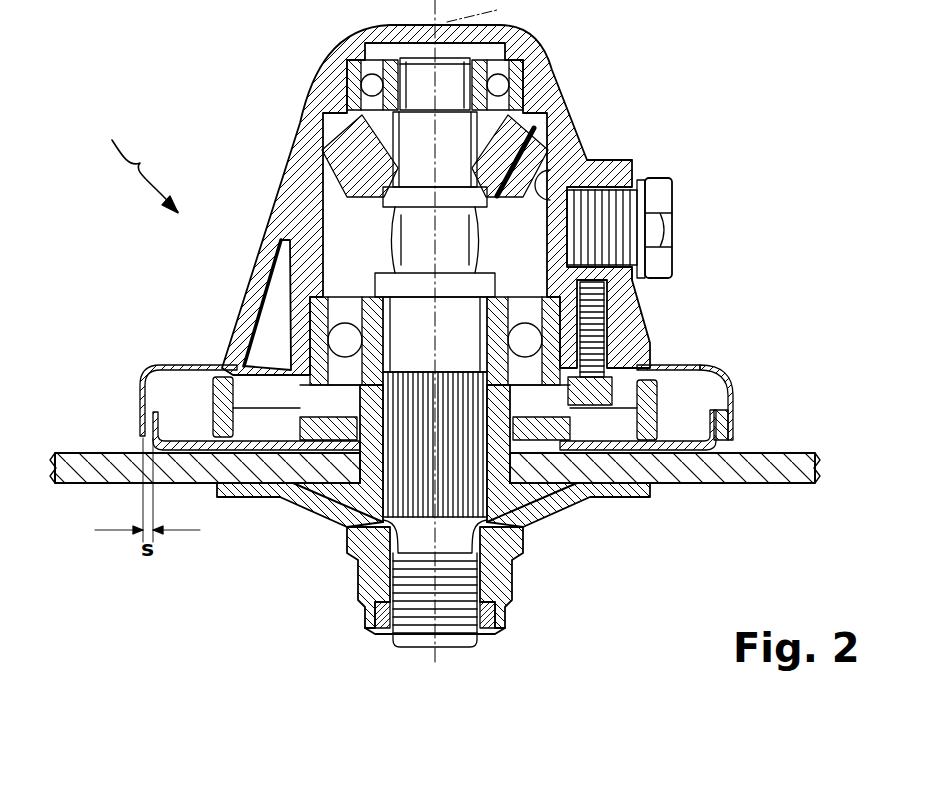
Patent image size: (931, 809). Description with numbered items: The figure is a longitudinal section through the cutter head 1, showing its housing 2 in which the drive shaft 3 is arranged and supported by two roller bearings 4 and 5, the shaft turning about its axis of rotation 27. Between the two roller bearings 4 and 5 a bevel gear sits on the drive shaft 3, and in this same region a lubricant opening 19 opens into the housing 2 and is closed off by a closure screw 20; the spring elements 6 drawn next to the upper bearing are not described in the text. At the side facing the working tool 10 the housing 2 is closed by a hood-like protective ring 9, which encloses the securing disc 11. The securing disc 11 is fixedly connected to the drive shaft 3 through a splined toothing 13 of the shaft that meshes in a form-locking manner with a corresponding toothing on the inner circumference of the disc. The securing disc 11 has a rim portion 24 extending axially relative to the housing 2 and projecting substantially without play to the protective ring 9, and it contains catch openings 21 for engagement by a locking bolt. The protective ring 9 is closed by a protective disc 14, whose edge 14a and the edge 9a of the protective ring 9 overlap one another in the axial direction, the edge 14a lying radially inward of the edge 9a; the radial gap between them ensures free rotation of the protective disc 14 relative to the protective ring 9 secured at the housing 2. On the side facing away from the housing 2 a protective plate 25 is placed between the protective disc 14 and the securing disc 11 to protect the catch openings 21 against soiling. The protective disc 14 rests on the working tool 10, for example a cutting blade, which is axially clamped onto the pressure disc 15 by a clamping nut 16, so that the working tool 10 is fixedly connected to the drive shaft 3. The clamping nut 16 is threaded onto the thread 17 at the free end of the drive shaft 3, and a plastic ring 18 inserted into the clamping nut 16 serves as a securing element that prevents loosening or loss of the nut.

The cutter head 1 is at (133, 166).
The housing 2 is at (290, 213).
The drive shaft 3 is at (413, 532).
The roller bearing 4 is at (362, 83).
The roller bearing 5 is at (333, 337).
The spring washers 6 is at (350, 155).
The protective ring 9 is at (690, 367).
The edge of the protective ring 9a is at (735, 432).
The working tool 10 is at (100, 465).
The securing disc 11 is at (612, 430).
The splined toothing 13 is at (340, 500).
The protective disc 14 is at (690, 457).
The edge of the protective disc 14a is at (730, 390).
The pressure disc 15 is at (533, 520).
The clamping nut 16 is at (497, 583).
The thread 17 is at (405, 633).
The plastic ring 18 is at (490, 617).
The lubricant opening 19 is at (560, 157).
The closure screw 20 is at (653, 220).
The catch openings 21 is at (257, 430).
The rim portion 24 is at (160, 367).
The protective plate 25 is at (257, 448).
The axis of rotation 27 is at (488, 11).